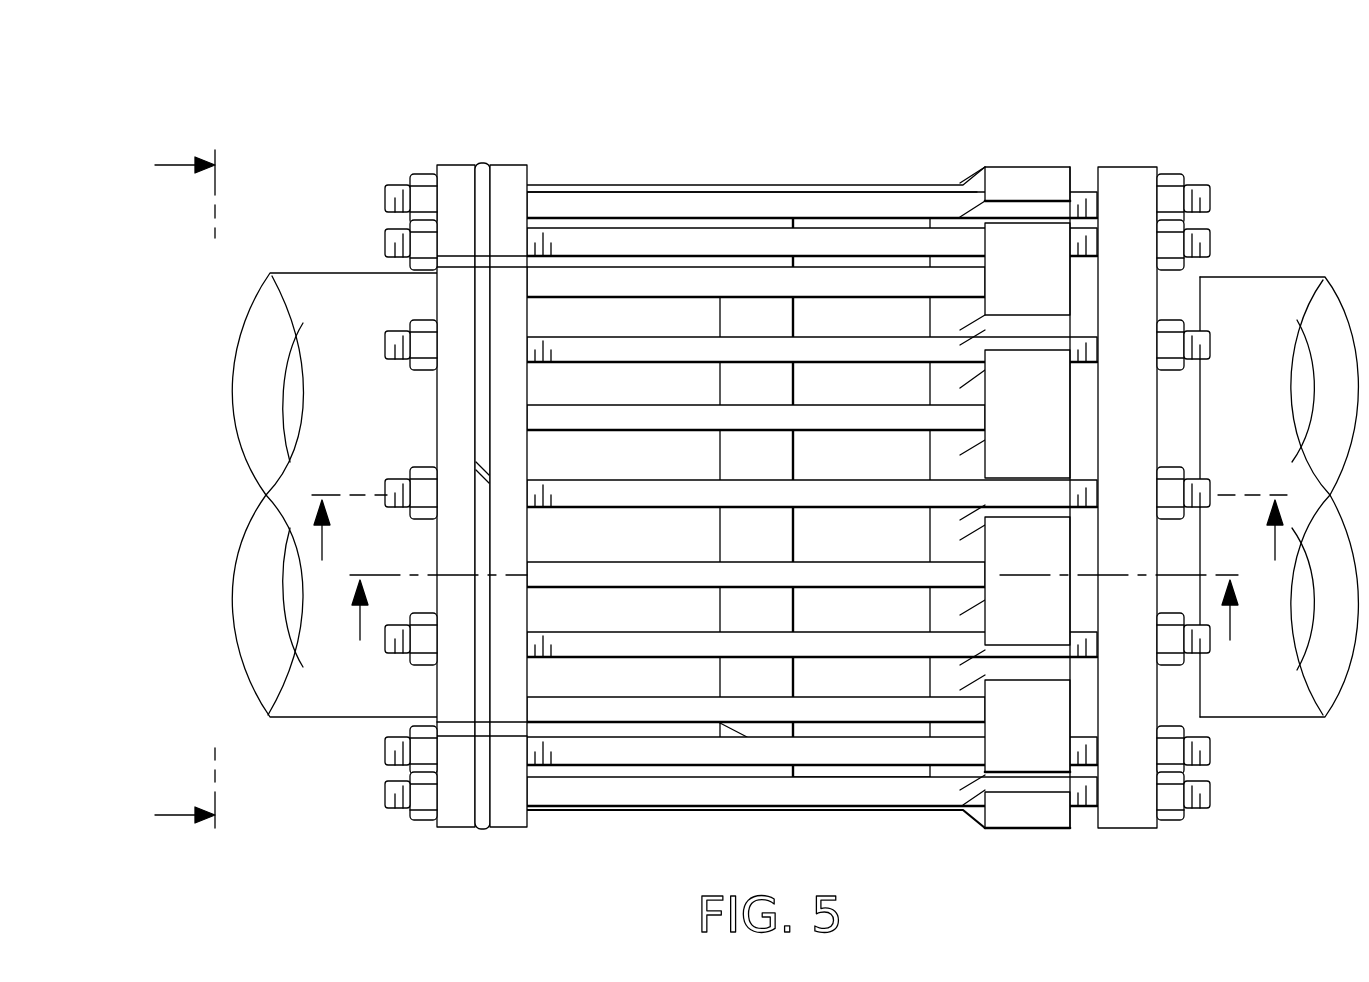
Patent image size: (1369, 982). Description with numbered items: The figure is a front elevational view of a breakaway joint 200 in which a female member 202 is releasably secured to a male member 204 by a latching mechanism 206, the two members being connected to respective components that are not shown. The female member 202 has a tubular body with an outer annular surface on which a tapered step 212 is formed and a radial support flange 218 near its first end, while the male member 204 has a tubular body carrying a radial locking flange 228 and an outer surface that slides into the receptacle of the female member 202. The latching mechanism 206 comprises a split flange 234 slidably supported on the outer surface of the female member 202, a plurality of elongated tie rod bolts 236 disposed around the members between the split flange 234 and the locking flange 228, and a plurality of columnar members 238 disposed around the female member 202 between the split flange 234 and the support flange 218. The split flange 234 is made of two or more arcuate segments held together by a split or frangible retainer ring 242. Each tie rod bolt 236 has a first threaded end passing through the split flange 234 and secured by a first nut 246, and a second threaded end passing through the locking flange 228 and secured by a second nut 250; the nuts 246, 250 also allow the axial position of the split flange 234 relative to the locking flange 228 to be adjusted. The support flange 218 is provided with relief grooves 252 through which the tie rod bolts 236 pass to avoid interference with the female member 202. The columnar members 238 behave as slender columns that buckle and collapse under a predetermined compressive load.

The breakaway joint 200 is at (352, 88).
The female member 202 is at (338, 262).
The male member 204 is at (1292, 268).
The latching mechanism 206 is at (902, 180).
The tapered step 212 is at (737, 685).
The support flange 218 is at (1026, 476).
The locking flange 228 is at (1135, 167).
The split flange 234 is at (512, 165).
The tie rod bolts 236 is at (835, 337).
The columnar members 238 is at (670, 267).
The retainer ring 242 is at (483, 163).
The first nut 246 is at (417, 277).
The second nut 250 is at (1187, 327).
The relief grooves 252 is at (1000, 212).